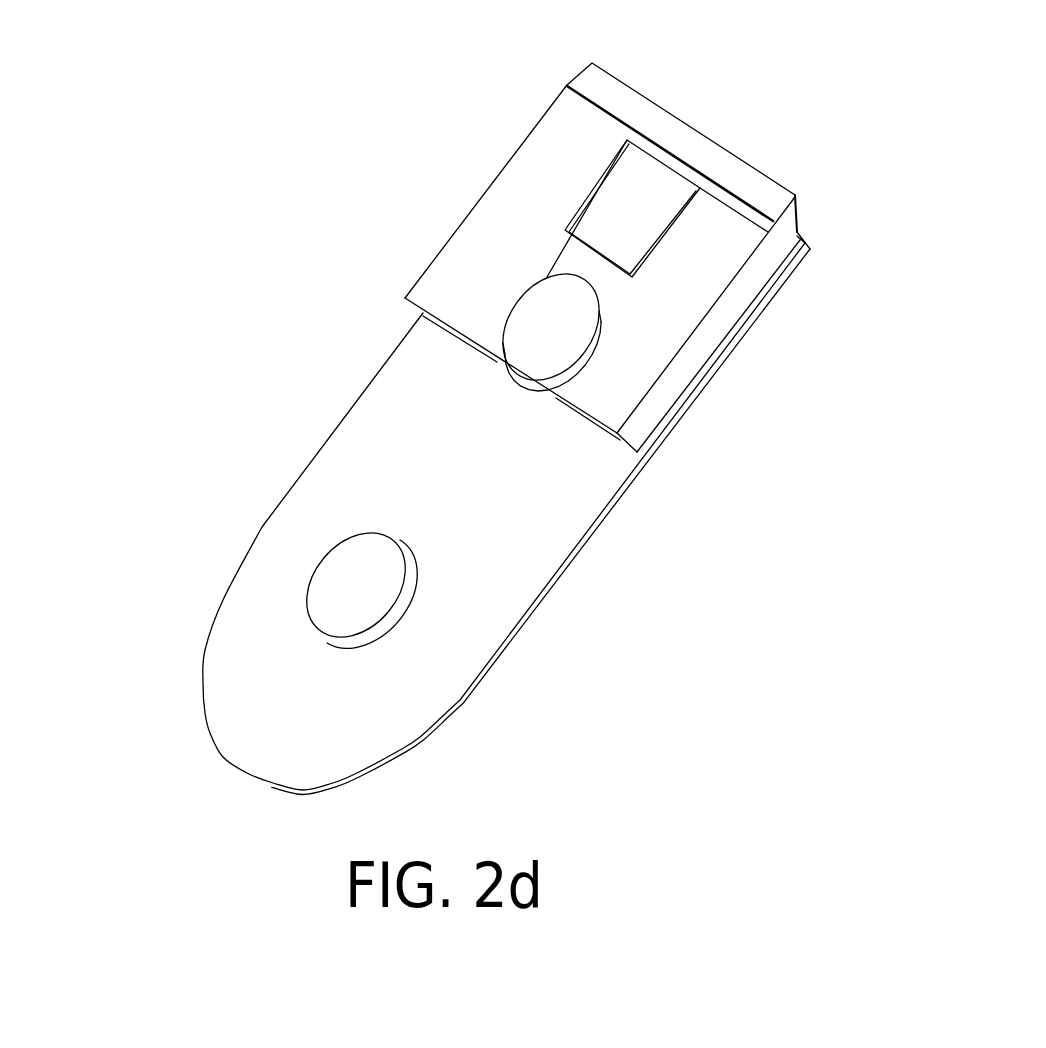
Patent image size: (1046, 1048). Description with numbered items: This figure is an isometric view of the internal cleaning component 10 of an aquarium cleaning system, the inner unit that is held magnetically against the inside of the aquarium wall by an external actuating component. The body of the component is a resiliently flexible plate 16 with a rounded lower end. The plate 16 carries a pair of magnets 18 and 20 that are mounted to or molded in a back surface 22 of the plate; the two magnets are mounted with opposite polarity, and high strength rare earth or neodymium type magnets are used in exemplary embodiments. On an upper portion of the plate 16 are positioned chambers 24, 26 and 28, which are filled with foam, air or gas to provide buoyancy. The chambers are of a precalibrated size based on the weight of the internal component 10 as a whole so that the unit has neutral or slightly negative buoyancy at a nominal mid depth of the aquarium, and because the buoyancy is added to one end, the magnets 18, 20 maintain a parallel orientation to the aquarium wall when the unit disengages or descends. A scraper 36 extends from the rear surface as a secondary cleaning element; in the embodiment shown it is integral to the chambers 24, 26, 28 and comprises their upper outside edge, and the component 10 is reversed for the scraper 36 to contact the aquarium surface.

The internal cleaning component 10 is at (266, 417).
The resiliently flexible plate 16 is at (232, 577).
The magnet 18 is at (357, 602).
The magnet 20 is at (535, 337).
The back surface 22 is at (360, 717).
The chamber 24 is at (467, 270).
The chamber 26 is at (622, 370).
The chamber 28 is at (625, 222).
The scraper 36 is at (588, 78).